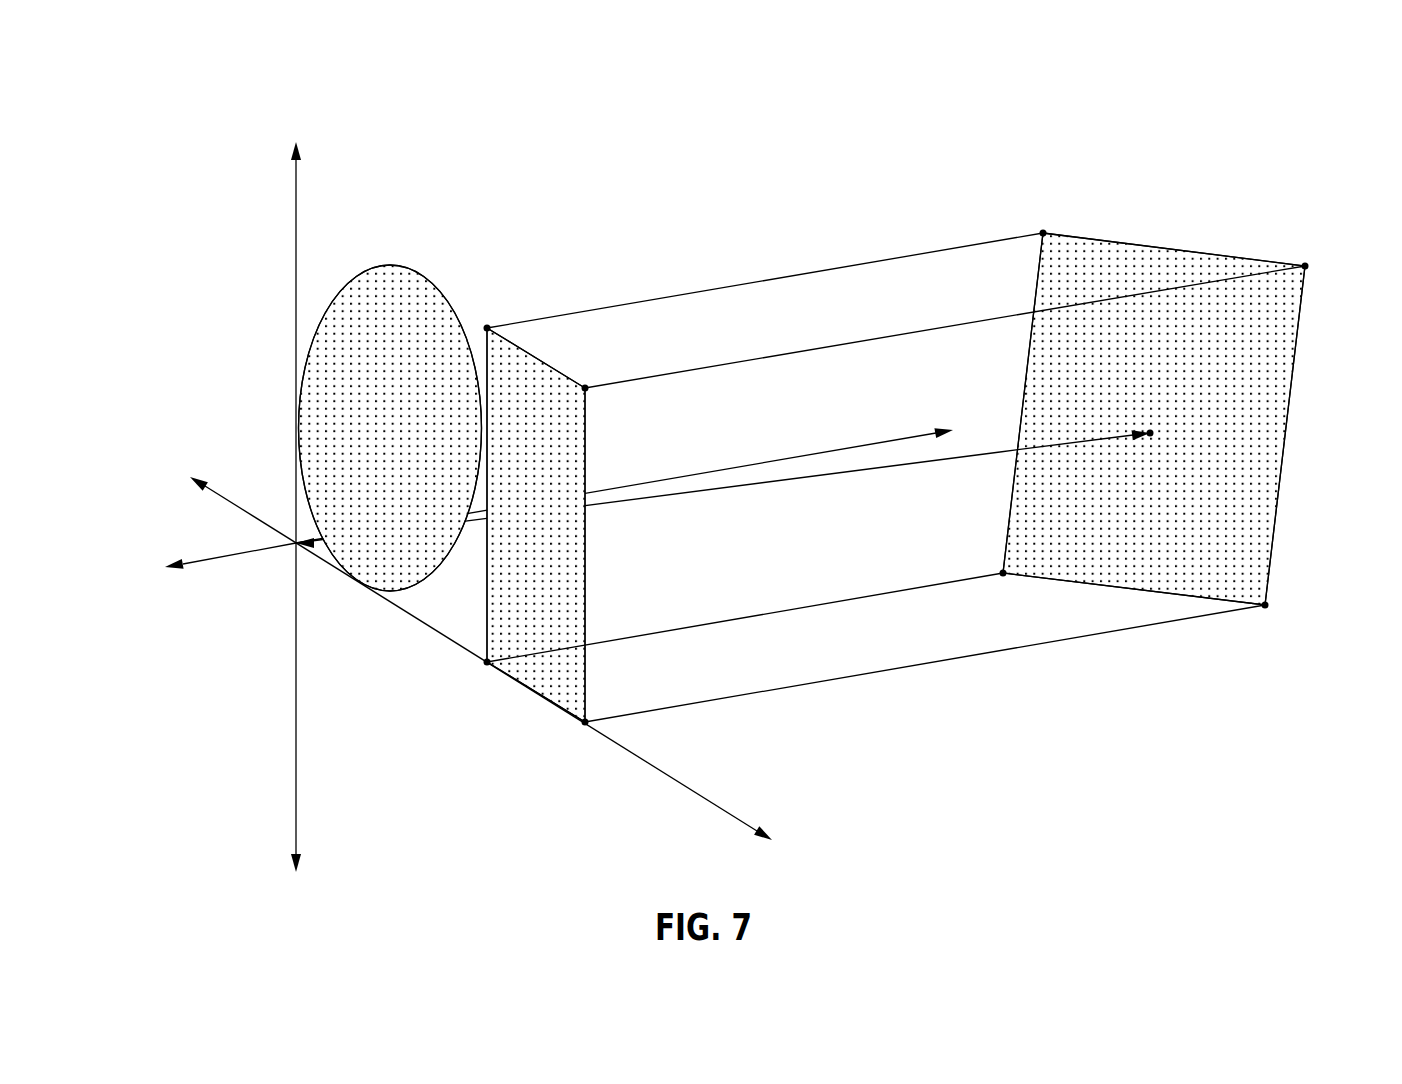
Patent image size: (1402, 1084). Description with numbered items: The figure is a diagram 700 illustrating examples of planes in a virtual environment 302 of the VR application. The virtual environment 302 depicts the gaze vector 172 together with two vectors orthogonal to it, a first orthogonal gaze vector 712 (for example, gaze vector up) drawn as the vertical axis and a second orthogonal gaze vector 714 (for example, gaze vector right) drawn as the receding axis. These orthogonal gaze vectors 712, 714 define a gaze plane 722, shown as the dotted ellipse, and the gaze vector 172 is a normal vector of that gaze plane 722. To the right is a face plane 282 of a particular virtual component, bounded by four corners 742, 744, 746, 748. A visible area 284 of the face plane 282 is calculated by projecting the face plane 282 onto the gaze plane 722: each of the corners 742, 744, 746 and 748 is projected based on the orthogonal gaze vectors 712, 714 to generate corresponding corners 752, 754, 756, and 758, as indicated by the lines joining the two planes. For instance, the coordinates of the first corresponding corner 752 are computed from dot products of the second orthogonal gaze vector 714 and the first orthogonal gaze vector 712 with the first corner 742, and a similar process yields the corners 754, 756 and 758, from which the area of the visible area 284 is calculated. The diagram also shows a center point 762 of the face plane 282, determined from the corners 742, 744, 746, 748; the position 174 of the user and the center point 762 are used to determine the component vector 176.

The diagram 700 is at (49, 98).
The virtual environment 302 is at (617, 80).
The first orthogonal gaze vector 712 is at (296, 190).
The second orthogonal gaze vector 714 is at (658, 768).
The position 174 is at (296, 543).
The gaze vector 172 is at (840, 449).
The component vector 176 is at (780, 482).
The gaze plane 722 is at (390, 428).
The visible area 284 is at (536, 525).
The face plane 282 is at (1154, 419).
The center point 762 is at (1150, 433).
The first corresponding corner 752 is at (487, 328).
The corresponding corner 754 is at (585, 388).
The corresponding corner 756 is at (487, 662).
The corresponding corner 758 is at (585, 722).
The first corner 742 is at (1043, 233).
The corner 744 is at (1305, 266).
The corner 746 is at (1003, 573).
The corner 748 is at (1265, 605).